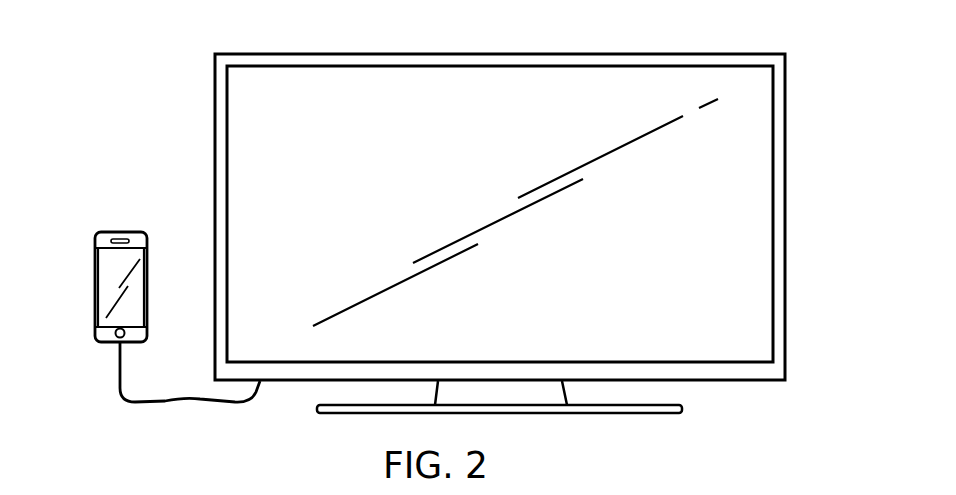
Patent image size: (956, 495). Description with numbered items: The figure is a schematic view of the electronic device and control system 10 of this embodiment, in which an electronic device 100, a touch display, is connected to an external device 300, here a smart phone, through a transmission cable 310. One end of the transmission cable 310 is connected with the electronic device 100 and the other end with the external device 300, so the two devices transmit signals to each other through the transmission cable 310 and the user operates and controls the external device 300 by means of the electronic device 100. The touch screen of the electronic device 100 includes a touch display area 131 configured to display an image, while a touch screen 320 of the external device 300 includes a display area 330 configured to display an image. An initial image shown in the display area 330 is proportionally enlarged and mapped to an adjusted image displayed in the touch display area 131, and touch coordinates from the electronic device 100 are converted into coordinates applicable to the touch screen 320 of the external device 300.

The display system 10 is at (50, 81).
The electronic device 100 is at (787, 139).
The touch display area 131 is at (754, 207).
The external device 300 is at (107, 233).
The transmission cable 310 is at (118, 370).
The touch screen 320 is at (95, 306).
The display area 330 is at (113, 270).